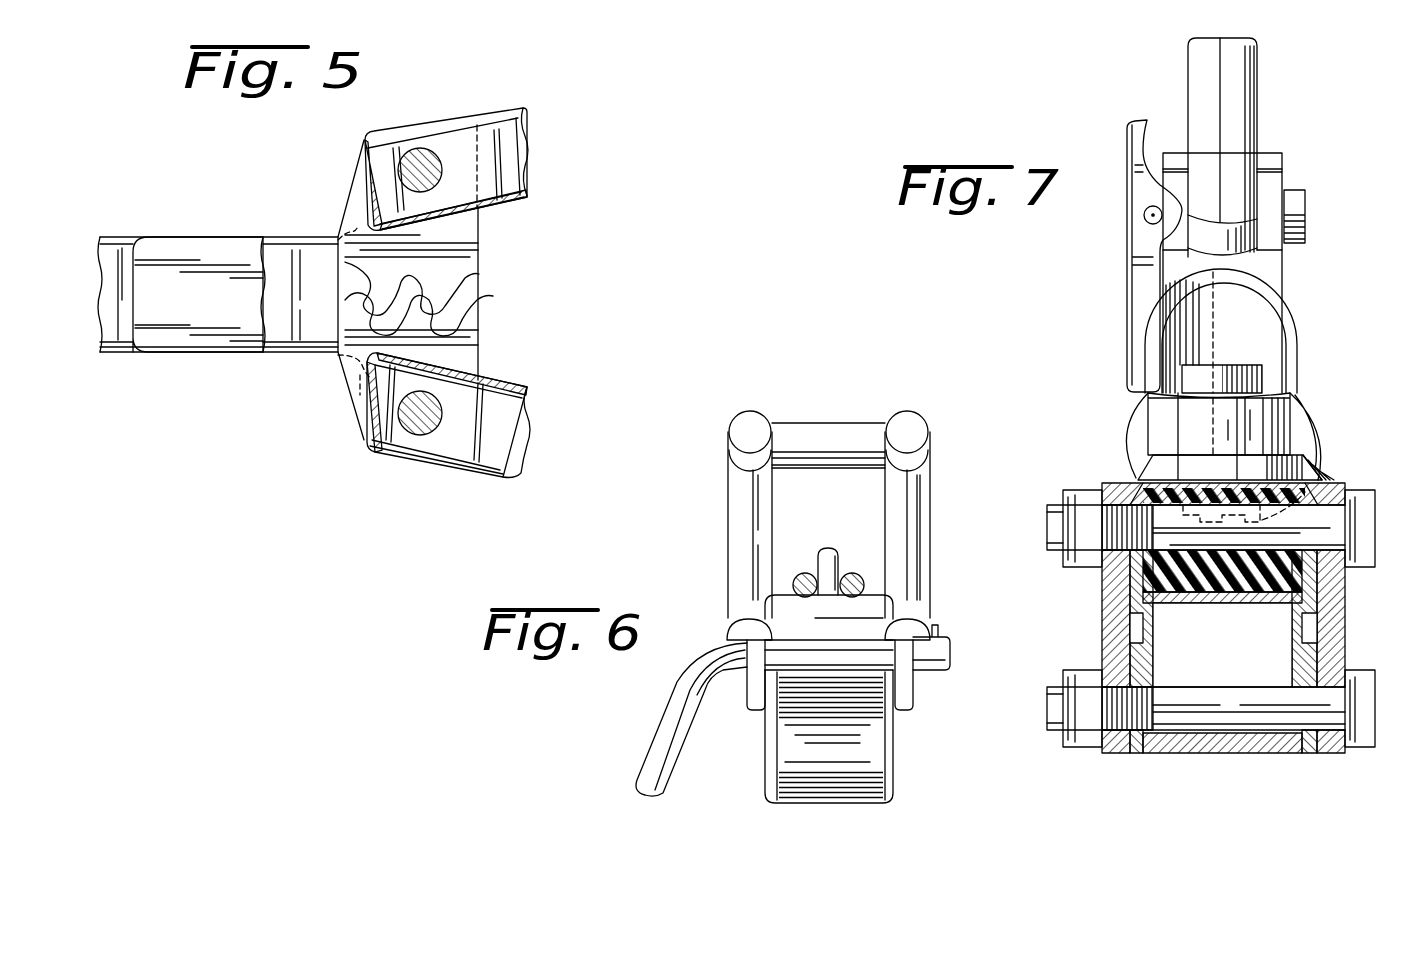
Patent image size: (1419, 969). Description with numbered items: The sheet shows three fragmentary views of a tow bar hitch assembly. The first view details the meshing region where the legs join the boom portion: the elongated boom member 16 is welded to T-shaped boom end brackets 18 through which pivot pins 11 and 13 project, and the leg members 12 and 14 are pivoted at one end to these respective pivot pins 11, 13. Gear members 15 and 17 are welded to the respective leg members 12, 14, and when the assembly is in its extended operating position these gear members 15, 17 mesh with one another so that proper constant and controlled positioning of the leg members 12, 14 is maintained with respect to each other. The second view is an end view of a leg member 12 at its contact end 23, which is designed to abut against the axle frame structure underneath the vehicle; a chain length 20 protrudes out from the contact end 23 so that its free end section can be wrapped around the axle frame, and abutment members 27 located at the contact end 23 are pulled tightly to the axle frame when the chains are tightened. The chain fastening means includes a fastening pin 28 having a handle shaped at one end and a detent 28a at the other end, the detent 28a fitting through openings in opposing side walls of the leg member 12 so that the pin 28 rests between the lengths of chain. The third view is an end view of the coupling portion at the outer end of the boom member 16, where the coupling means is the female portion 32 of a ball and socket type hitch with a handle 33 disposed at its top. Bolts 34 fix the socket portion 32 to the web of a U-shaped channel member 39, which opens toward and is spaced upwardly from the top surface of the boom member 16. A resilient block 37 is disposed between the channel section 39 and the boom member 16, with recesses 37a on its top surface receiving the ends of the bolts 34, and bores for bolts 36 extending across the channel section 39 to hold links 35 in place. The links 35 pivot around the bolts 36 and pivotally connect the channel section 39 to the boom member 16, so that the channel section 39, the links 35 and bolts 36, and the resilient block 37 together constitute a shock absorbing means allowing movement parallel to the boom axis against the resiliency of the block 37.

In FIG. 5, the pivot pin 11 is at (424, 158).
In FIG. 5, the leg member 12 is at (512, 172).
In FIG. 6, the leg member 12 is at (893, 770).
In FIG. 5, the pivot pin 13 is at (420, 432).
In FIG. 5, the leg member 14 is at (495, 395).
In FIG. 5, the gear member 15 is at (480, 237).
In FIG. 5, the boom member 16 is at (126, 238).
In FIG. 5, the gear member 17 is at (468, 318).
In FIG. 5, the T-shaped boom end bracket 18 is at (474, 276).
In FIG. 6, the chain length 20 is at (840, 560).
In FIG. 6, the contact end 23 is at (720, 532).
In FIG. 6, the abutment member 27 is at (747, 420).
In FIG. 6, the fastening pin 28 is at (647, 742).
In FIG. 6, the detent 28a is at (937, 628).
In FIG. 7, the female portion 32 is at (1318, 410).
In FIG. 7, the handle 33 is at (1258, 105).
In FIG. 7, the bolt 34 is at (1230, 370).
In FIG. 7, the link 35 is at (1340, 660).
In FIG. 7, the bolt 36 is at (1355, 490).
In FIG. 7, the resilient block 37 is at (1140, 588).
In FIG. 7, the recess 37a is at (1312, 465).
In FIG. 7, the U-shaped channel member 39 is at (1132, 480).